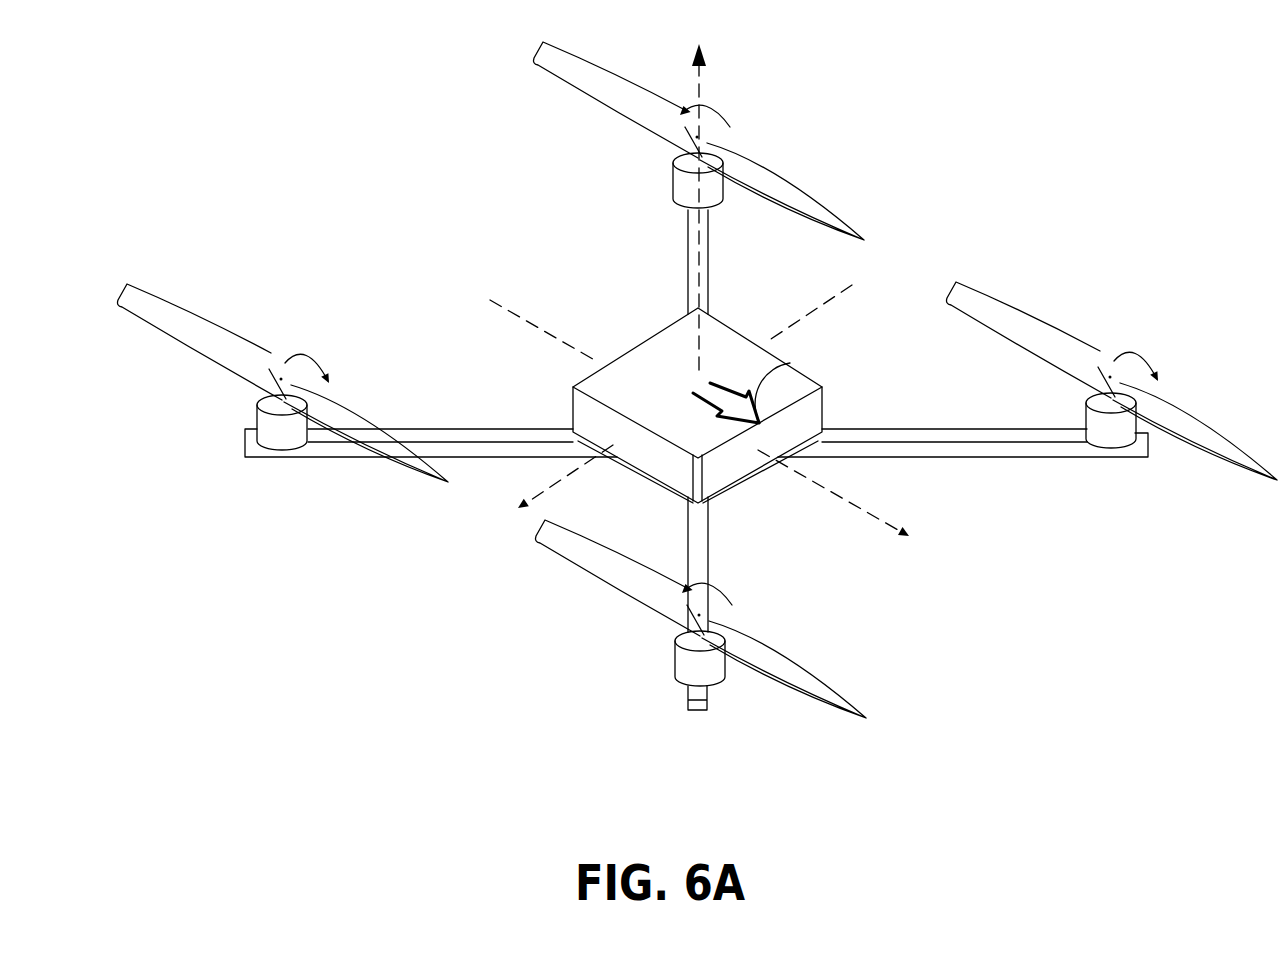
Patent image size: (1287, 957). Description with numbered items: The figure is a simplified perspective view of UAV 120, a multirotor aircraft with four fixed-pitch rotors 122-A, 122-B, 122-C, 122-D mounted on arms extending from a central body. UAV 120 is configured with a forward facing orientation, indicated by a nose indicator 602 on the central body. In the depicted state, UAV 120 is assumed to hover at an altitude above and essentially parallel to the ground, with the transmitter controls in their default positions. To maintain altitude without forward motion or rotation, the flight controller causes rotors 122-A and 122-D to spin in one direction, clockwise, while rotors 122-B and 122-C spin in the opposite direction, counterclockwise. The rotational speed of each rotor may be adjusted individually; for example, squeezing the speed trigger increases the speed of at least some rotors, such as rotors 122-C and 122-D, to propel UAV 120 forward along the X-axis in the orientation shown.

The UAV 120 is at (304, 179).
The rotor 122-A is at (1077, 332).
The rotor 122-B is at (610, 592).
The rotor 122-C is at (588, 105).
The rotor 122-D is at (203, 362).
The nose indicator 602 is at (790, 363).